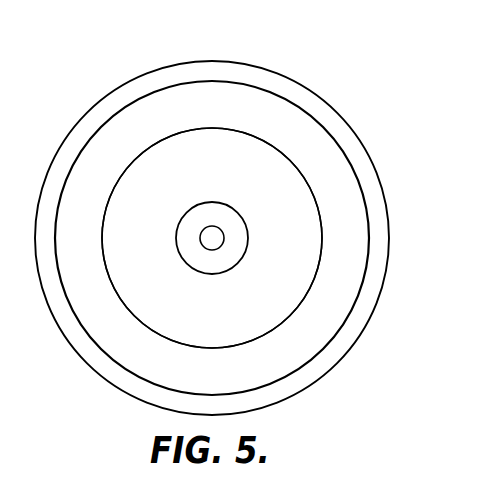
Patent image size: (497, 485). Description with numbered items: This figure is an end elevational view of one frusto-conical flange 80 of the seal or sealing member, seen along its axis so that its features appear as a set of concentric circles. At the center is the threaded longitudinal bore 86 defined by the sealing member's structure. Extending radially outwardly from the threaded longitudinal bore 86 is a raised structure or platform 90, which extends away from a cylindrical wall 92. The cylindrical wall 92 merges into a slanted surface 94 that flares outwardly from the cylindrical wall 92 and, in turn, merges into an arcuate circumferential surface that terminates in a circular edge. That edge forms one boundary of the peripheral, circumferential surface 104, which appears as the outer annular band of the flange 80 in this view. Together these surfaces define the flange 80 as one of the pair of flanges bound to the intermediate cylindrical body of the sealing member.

The flange 80 is at (188, 44).
The peripheral circumferential surface 104 is at (288, 92).
The slanted surface 94 is at (327, 177).
The cylindrical wall 92 is at (212, 318).
The raised structure or platform 90 is at (235, 228).
The threaded longitudinal bore 86 is at (210, 226).